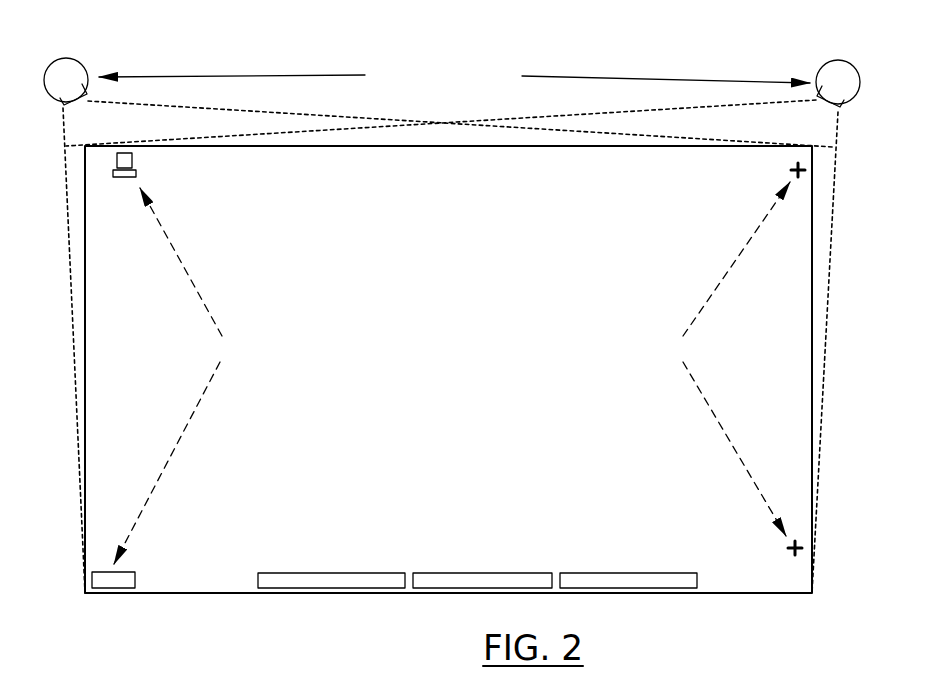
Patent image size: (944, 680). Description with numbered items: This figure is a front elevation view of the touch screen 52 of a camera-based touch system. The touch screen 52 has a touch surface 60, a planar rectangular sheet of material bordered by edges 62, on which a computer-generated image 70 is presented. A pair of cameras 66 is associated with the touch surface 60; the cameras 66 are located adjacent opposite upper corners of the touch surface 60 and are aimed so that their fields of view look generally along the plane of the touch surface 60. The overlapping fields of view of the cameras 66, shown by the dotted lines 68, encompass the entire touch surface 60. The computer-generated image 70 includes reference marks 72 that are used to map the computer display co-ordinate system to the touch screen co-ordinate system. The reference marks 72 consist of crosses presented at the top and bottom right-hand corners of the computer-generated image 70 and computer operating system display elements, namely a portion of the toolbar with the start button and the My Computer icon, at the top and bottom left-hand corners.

The touch screen 52 is at (447, 372).
The touch surface 60 is at (485, 437).
The edges 62 is at (540, 146).
The cameras 66 is at (72, 68).
The dotted lines 68 is at (297, 104).
The computer-generated image 70 is at (272, 608).
The reference marks 72 is at (138, 162).